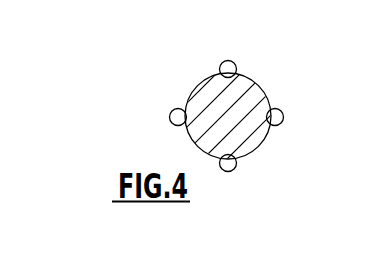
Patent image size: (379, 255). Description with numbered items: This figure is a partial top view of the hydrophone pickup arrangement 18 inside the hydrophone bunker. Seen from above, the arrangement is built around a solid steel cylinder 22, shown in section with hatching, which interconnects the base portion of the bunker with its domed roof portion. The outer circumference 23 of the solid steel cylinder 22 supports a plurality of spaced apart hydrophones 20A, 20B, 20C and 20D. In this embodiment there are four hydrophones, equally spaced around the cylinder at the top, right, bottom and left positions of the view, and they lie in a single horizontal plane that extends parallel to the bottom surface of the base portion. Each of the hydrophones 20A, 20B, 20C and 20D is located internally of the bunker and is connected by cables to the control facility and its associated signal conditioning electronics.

The hydrophone pickup arrangement 18 is at (188, 63).
The hydrophone 20A is at (232, 61).
The hydrophone 20B is at (284, 117).
The hydrophone 20C is at (231, 171).
The hydrophone 20D is at (170, 115).
The solid steel cylinder 22 is at (250, 87).
The outer circumference 23 is at (258, 147).